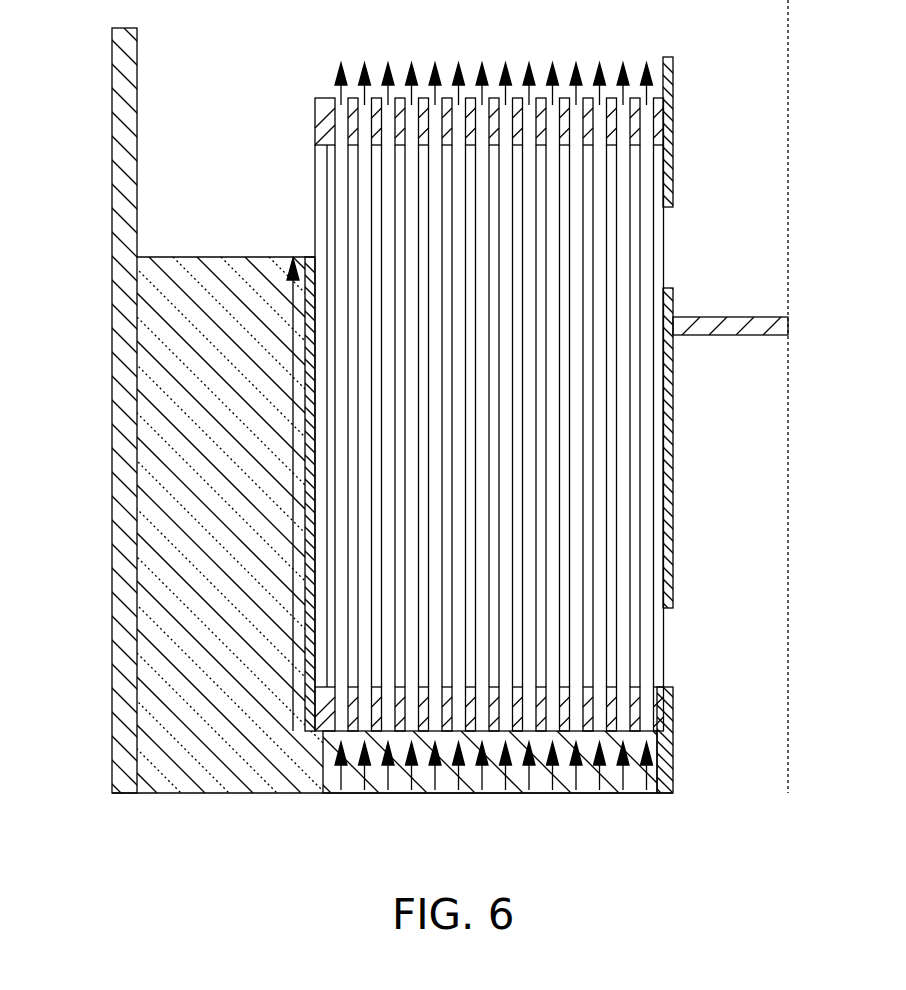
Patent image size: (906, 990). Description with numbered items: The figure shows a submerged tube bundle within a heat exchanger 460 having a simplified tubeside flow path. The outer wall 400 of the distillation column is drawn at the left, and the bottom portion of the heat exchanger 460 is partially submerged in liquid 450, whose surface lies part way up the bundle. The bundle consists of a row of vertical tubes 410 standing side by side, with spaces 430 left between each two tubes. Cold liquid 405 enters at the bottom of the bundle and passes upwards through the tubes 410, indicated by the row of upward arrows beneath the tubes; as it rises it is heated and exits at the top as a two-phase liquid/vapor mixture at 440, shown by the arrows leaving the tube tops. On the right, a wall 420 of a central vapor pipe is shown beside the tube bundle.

The outer wall 400 is at (112, 494).
The cold liquid 405 is at (338, 776).
The tubes 410 is at (655, 657).
The wall of central vapor pipe 420 is at (673, 471).
The spaces 430 is at (635, 635).
The two-phase liquid/vapor exit 440 is at (336, 74).
The liquid 450 is at (200, 255).
The heat exchanger 460 is at (315, 164).